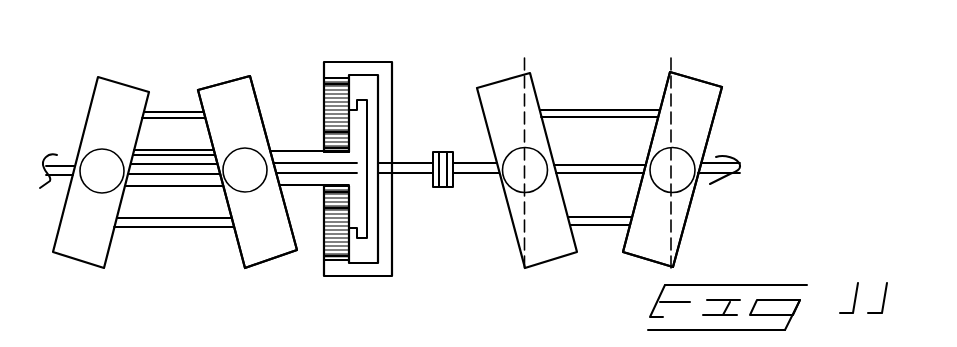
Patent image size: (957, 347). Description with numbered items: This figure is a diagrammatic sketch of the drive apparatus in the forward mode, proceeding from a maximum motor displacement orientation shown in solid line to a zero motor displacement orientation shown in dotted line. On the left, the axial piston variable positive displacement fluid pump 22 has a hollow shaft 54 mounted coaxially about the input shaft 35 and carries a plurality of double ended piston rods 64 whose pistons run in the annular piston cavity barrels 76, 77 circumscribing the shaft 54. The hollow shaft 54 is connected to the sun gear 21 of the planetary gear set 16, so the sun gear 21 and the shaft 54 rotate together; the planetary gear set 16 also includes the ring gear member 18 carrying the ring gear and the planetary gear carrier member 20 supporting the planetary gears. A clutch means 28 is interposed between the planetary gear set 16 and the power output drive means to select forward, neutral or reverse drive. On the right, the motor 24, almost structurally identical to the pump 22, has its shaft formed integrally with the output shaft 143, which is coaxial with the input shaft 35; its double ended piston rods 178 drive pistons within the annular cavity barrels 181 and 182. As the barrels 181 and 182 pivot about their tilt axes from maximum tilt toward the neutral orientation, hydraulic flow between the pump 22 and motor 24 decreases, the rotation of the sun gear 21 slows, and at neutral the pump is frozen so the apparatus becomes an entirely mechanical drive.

The planetary gear set 16 is at (383, 59).
The ring gear member 18 is at (369, 63).
The planetary gear carrier member 20 is at (362, 150).
The sun gear 21 is at (333, 196).
The axial piston variable positive displacement fluid pump 22 is at (231, 76).
The motor 24 is at (716, 75).
The clutch means 28 is at (466, 138).
The input shaft 35 is at (293, 163).
The hollow shaft 54 is at (184, 150).
The double ended piston rods 64 is at (186, 84).
The annular piston cavity barrel 76 is at (99, 99).
The annular piston cavity barrel 77 is at (256, 104).
The output shaft 143 is at (612, 165).
The double ended piston rods 178 is at (568, 110).
The annular cavity barrel 181 is at (515, 73).
The annular cavity barrel 182 is at (708, 123).